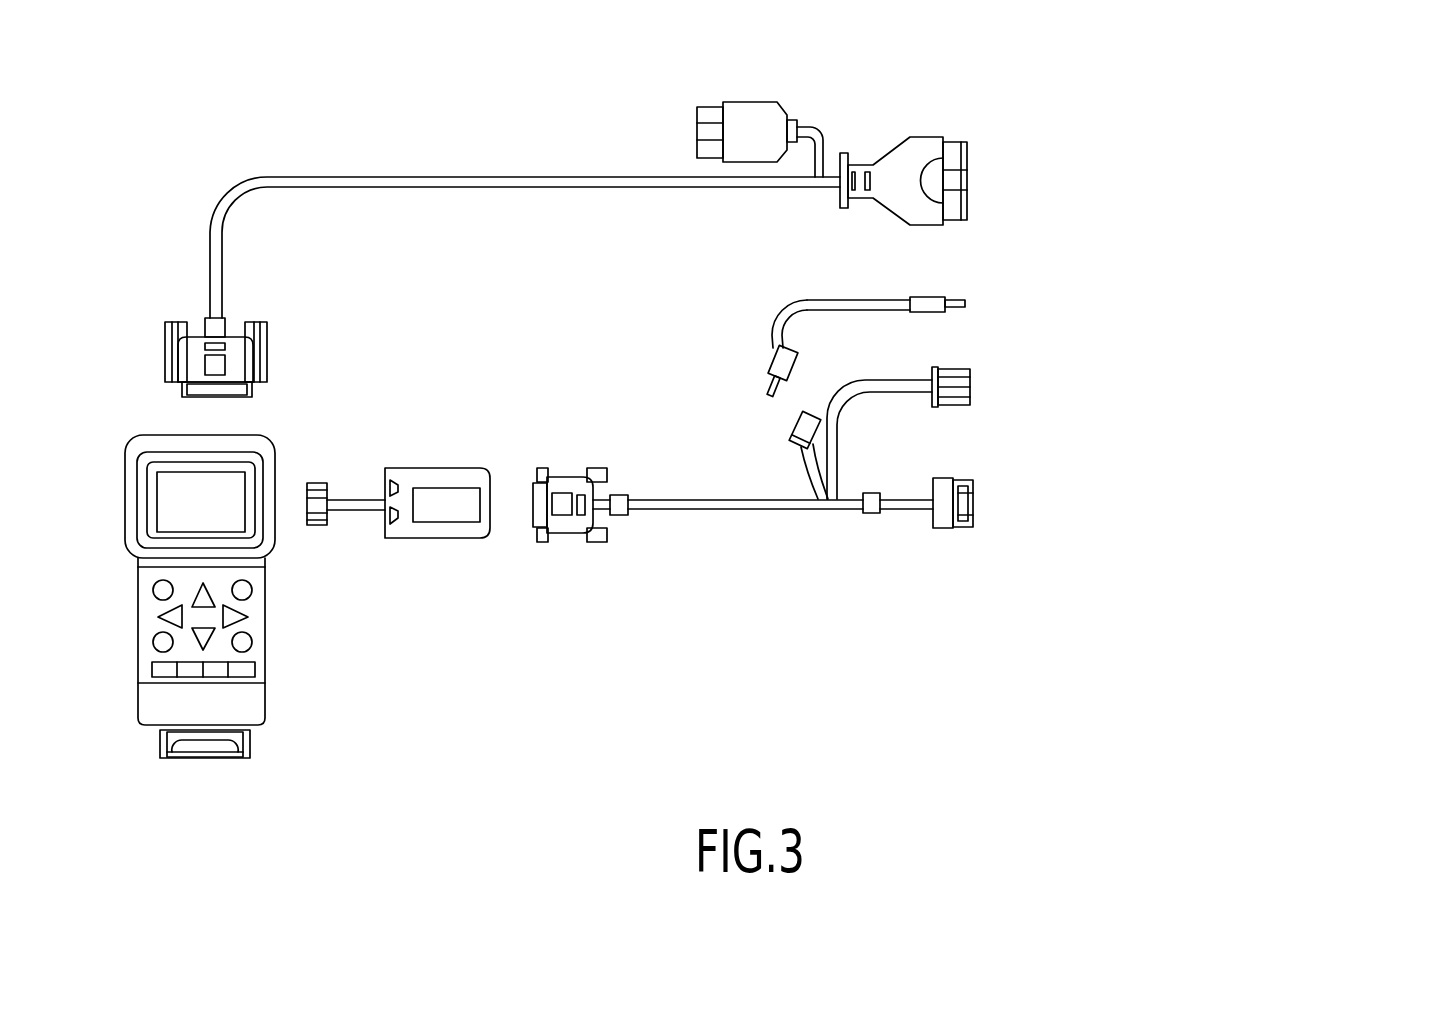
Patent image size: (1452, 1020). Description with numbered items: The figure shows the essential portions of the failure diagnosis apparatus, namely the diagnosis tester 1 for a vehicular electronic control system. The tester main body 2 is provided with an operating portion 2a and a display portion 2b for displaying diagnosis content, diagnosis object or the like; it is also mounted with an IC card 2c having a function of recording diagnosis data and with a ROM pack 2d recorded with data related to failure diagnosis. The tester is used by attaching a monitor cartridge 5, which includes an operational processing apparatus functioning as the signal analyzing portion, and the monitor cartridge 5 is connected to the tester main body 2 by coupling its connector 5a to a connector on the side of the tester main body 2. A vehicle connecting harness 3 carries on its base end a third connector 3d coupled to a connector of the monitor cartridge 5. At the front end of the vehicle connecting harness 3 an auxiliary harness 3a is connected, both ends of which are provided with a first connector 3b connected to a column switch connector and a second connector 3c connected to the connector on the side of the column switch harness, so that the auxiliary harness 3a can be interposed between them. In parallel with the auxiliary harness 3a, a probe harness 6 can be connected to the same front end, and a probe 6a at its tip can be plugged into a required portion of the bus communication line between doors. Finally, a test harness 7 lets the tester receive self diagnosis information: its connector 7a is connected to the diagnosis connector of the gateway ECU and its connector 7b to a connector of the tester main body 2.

The diagnosis tester 1 is at (493, 710).
The tester main body 2 is at (259, 628).
The operating portion 2a is at (258, 620).
The display portion 2b is at (235, 492).
The IC card 2c is at (183, 737).
The ROM pack 2d is at (230, 743).
The vehicle connecting harness 3 is at (710, 505).
The auxiliary harness 3a is at (846, 400).
The first connector 3b is at (956, 407).
The second connector 3c is at (953, 528).
The third connector 3d is at (563, 470).
The monitor cartridge 5 is at (455, 515).
The connector 5a is at (317, 525).
The probe harness 6 is at (768, 330).
The probe 6a is at (925, 297).
The test harness 7 is at (390, 177).
The connector 7a is at (930, 137).
The connector 7b is at (243, 358).